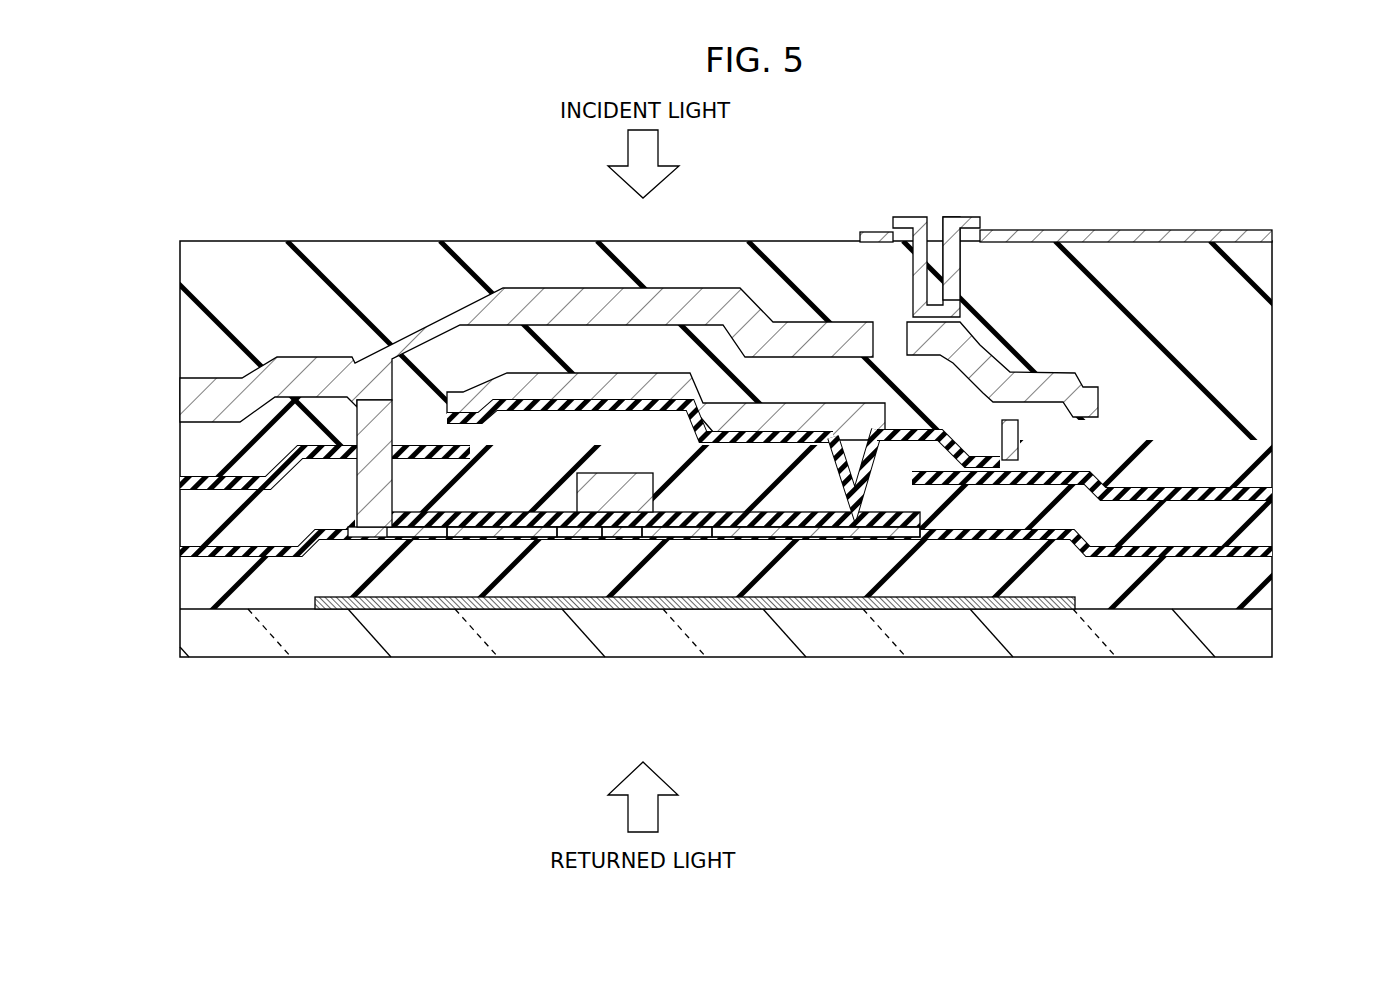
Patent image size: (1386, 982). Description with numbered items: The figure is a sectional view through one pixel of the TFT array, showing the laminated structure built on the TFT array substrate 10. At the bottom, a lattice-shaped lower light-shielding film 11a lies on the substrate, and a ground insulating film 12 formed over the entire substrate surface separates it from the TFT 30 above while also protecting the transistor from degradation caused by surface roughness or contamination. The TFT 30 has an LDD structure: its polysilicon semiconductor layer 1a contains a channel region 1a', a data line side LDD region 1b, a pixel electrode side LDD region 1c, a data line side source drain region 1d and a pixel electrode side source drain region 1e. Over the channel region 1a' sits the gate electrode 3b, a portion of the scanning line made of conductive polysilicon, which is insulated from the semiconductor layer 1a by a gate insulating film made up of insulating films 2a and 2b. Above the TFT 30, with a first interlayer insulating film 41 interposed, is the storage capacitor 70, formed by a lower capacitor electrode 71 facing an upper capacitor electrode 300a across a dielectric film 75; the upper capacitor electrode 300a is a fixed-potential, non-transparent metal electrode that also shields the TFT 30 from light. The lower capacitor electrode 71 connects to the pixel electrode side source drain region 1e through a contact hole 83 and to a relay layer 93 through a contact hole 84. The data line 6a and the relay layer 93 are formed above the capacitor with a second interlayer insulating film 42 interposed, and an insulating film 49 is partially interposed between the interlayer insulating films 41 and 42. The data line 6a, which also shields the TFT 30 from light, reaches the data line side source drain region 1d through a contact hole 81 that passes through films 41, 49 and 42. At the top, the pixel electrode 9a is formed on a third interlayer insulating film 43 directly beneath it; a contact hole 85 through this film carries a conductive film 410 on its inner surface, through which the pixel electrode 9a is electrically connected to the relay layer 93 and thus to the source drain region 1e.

The data line 6a is at (455, 320).
The pixel electrode 9a is at (1098, 233).
The conductive film 410 is at (912, 267).
The contact hole 85 is at (960, 278).
The relay layer 93 is at (997, 360).
The third interlayer insulating film 43 is at (1260, 353).
The upper capacitor electrode 300a is at (757, 410).
The storage capacitor 70 is at (798, 470).
The dielectric film 75 is at (913, 430).
The contact hole 84 is at (1018, 440).
The contact hole 83 is at (873, 478).
The contact hole 81 is at (378, 492).
The lower capacitor electrode 71 is at (762, 455).
The insulating film 49 is at (190, 482).
The second interlayer insulating film 42 is at (1260, 470).
The first interlayer insulating film 41 is at (1260, 523).
The insulating film 2a is at (1260, 551).
The insulating film 2b is at (905, 540).
The ground insulating film 12 is at (1260, 585).
The TFT array substrate 10 is at (1260, 633).
The lower light-shielding film 11a is at (1032, 612).
The TFT 30 is at (780, 695).
The semiconductor layer 1a is at (413, 612).
The data line side source drain region 1d is at (460, 540).
The data line side LDD region 1b is at (567, 540).
The channel region 1a' is at (622, 612).
The gate electrode 3b is at (640, 505).
The pixel electrode side LDD region 1c is at (700, 540).
The pixel electrode side source drain region 1e is at (763, 540).